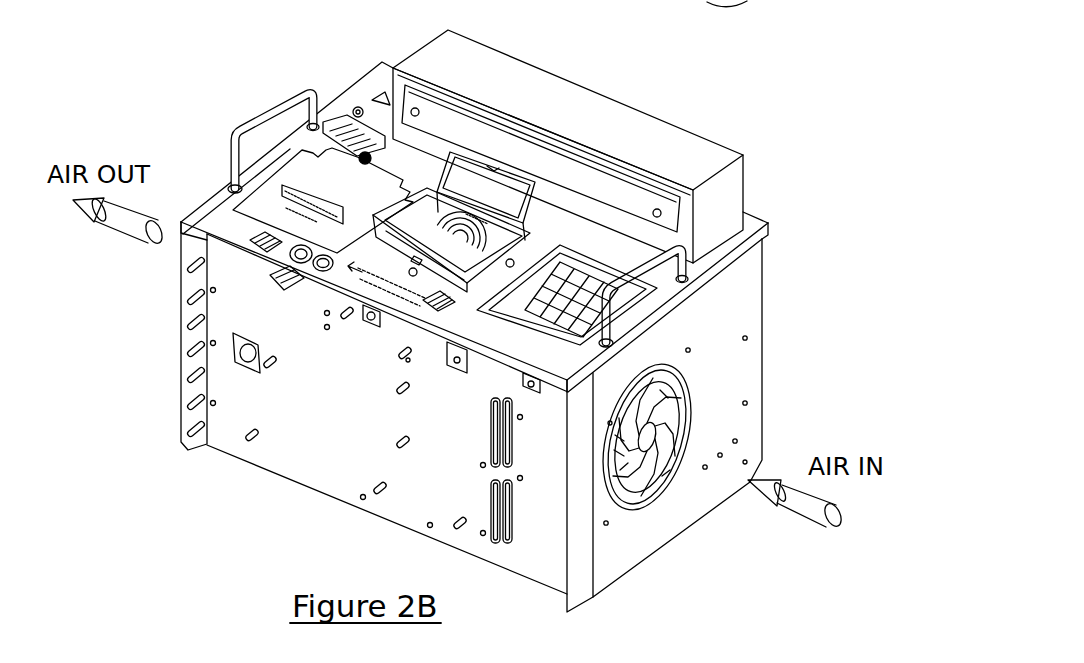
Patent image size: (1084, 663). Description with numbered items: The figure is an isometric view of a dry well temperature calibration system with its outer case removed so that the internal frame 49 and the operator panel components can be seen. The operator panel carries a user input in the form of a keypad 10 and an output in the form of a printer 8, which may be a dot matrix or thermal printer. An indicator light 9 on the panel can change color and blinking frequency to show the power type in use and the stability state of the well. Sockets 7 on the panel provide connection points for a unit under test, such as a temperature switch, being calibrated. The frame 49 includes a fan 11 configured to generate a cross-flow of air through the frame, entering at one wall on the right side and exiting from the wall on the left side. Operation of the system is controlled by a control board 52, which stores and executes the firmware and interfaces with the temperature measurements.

The sockets 7 is at (290, 259).
The printer 8 is at (300, 168).
The indicator light 9 is at (345, 109).
The keypad 10 is at (603, 290).
The fan 11 is at (645, 433).
The frame 49 is at (190, 392).
The control board 52 is at (320, 445).